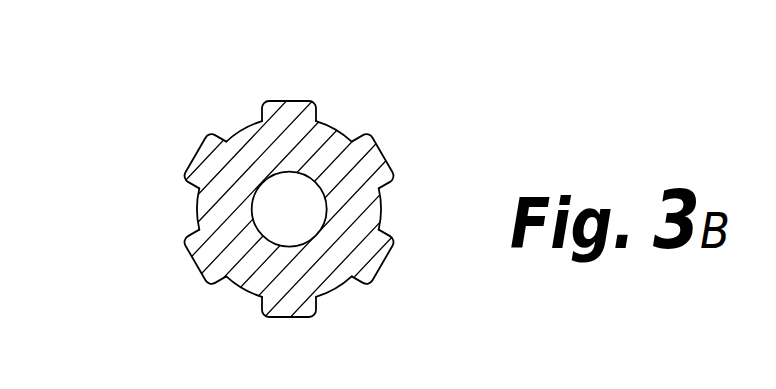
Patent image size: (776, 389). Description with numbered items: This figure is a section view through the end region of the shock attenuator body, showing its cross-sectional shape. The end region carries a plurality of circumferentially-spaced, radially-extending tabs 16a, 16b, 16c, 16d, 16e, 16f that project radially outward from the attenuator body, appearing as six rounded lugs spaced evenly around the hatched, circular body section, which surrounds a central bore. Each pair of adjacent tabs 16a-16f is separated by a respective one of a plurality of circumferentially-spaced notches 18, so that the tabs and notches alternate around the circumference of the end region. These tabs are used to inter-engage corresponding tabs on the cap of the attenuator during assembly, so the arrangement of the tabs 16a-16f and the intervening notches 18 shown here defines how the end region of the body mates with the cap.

The notches 18 is at (247, 128).
The tab 16a is at (292, 101).
The tab 16b is at (383, 153).
The tab 16c is at (385, 257).
The tab 16d is at (277, 318).
The tab 16e is at (189, 259).
The tab 16f is at (205, 142).